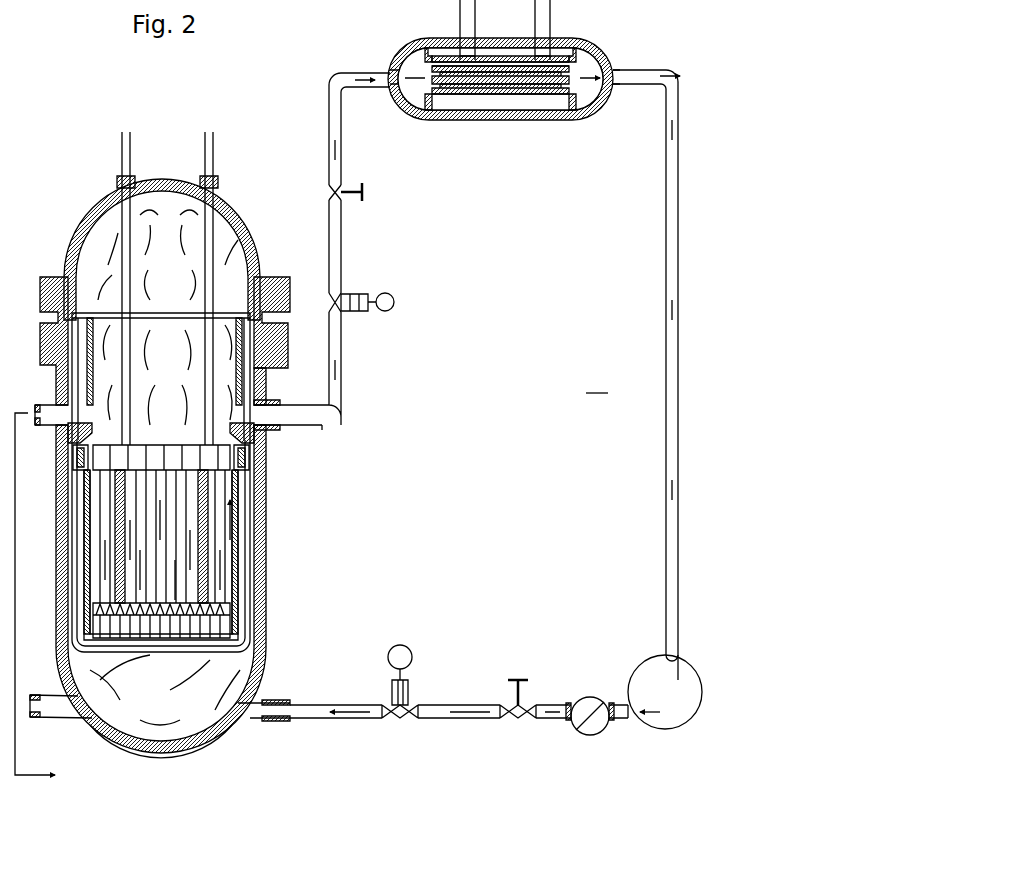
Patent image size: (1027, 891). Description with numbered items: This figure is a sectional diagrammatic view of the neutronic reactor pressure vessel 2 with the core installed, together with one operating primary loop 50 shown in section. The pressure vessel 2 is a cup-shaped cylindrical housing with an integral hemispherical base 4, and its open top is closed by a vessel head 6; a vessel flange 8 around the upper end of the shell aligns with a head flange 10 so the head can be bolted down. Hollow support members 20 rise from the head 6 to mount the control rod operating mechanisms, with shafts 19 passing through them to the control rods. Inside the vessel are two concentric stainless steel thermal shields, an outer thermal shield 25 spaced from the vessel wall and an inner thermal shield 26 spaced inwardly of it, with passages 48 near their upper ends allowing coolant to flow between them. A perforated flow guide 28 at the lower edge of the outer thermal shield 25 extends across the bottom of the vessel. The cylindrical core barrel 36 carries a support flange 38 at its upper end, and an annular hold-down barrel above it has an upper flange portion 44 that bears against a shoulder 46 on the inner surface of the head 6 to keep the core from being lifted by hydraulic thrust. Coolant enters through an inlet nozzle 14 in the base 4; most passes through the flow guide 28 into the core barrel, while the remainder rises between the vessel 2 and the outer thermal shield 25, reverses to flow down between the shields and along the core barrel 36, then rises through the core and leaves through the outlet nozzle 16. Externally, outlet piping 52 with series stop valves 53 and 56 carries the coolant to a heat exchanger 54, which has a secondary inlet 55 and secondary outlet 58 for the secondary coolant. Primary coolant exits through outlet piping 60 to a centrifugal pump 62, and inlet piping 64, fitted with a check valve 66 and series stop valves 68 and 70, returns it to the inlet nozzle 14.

The pressure vessel 2 is at (56, 525).
The hemispherical base 4 is at (222, 735).
The vessel head 6 is at (244, 220).
The vessel flange 8 is at (288, 353).
The head flange 10 is at (287, 298).
The inlet nozzle 14 is at (40, 694).
The outlet nozzle 16 is at (264, 433).
The shaft 19 is at (206, 272).
The support member 20 is at (214, 178).
The outer thermal shield 25 is at (74, 555).
The inner thermal shield 26 is at (83, 597).
The perforated flow guide 28 is at (130, 660).
The core barrel 36 is at (240, 580).
The support flange 38 is at (258, 442).
The flange portion 44 is at (238, 320).
The shoulder 46 is at (240, 300).
The passages 48 is at (73, 476).
The primary loop 50 is at (597, 384).
The outlet piping 52 is at (342, 378).
The stop valve 53 is at (350, 200).
The heat exchanger 54 is at (542, 122).
The secondary inlet 55 is at (460, 15).
The stop valve 56 is at (362, 294).
The secondary outlet 58 is at (550, 16).
The outlet piping 60 is at (658, 308).
The centrifugal pump 62 is at (692, 685).
The inlet piping 64 is at (330, 703).
The check valve 66 is at (586, 700).
The stop valve 68 is at (410, 650).
The stop valve 70 is at (519, 680).